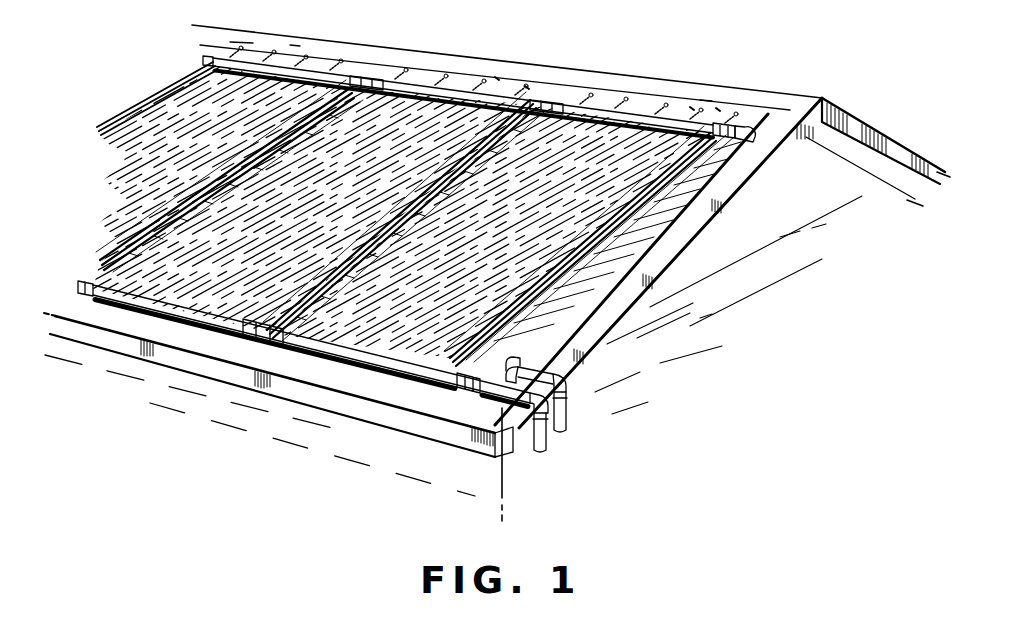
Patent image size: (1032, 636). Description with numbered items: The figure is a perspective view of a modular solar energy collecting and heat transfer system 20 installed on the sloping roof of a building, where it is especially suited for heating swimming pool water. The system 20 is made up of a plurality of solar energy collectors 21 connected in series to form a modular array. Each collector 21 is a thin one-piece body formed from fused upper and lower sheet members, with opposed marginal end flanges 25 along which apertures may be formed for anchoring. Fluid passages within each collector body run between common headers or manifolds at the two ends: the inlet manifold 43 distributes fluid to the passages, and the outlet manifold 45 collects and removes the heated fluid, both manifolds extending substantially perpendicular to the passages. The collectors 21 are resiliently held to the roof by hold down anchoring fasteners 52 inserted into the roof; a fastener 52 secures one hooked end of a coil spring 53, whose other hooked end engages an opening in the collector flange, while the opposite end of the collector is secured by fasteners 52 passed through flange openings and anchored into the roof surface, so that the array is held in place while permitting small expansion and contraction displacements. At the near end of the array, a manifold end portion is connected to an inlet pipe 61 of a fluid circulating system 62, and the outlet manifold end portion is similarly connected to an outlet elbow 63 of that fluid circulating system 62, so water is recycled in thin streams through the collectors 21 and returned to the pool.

The solar energy collecting and heat transfer system 20 is at (431, 66).
The solar energy collector 21 is at (313, 72).
The marginal end flange 25 is at (267, 342).
The inlet manifold 43 is at (439, 390).
The outlet manifold 45 is at (582, 103).
The hold down anchoring fastener 52 is at (527, 87).
The coil spring 53 is at (473, 80).
The inlet pipe 61 is at (503, 445).
The fluid circulating system 62 is at (576, 388).
The outlet elbow 63 is at (752, 133).